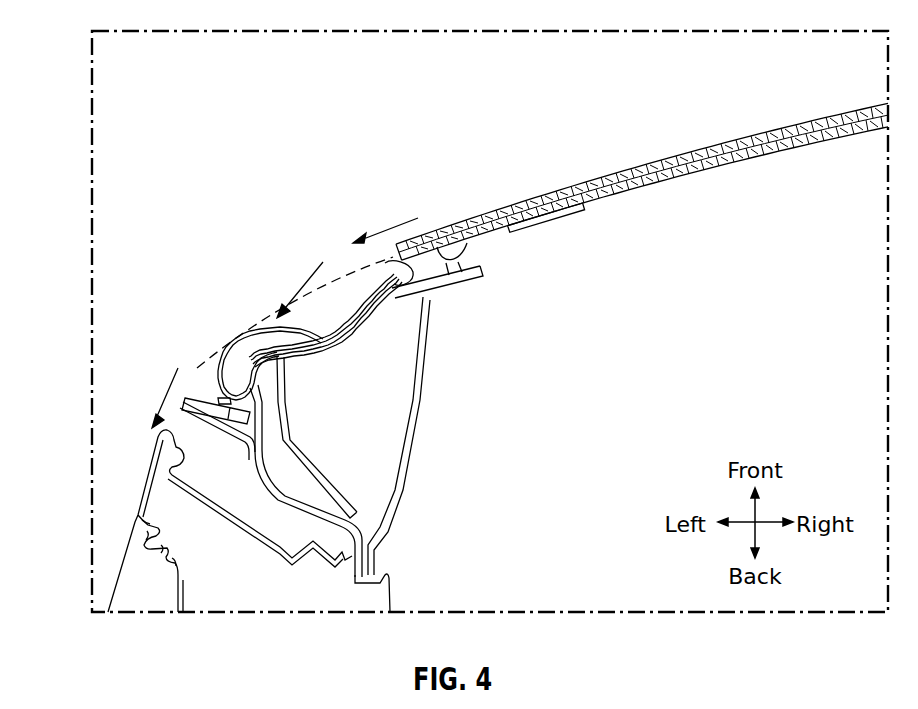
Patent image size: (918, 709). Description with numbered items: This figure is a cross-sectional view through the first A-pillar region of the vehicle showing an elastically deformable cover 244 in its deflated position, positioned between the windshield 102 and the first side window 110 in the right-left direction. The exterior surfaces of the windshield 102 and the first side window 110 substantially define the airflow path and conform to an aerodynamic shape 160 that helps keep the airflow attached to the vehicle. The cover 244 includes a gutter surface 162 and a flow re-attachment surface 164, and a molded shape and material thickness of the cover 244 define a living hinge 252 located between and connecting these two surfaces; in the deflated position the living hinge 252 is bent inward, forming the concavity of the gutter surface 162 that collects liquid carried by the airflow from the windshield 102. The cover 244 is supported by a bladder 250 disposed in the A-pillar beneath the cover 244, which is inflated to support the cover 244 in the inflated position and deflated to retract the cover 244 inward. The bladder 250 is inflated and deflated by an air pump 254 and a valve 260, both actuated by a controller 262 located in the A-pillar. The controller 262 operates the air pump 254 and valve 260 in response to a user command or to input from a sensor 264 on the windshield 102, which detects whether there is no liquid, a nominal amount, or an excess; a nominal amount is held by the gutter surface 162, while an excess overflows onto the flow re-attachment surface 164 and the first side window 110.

The windshield 102 is at (582, 185).
The first side window 110 is at (126, 550).
The aerodynamic shape 160 is at (331, 265).
The gutter surface 162 is at (345, 318).
The flow re-attachment surface 164 is at (222, 362).
The cover 244 is at (249, 351).
The bladder 250 is at (217, 383).
The living hinge 252 is at (303, 323).
The air pump 254 is at (213, 390).
The valve 260 is at (200, 386).
The controller 262 is at (236, 424).
The sensor 264 is at (527, 227).